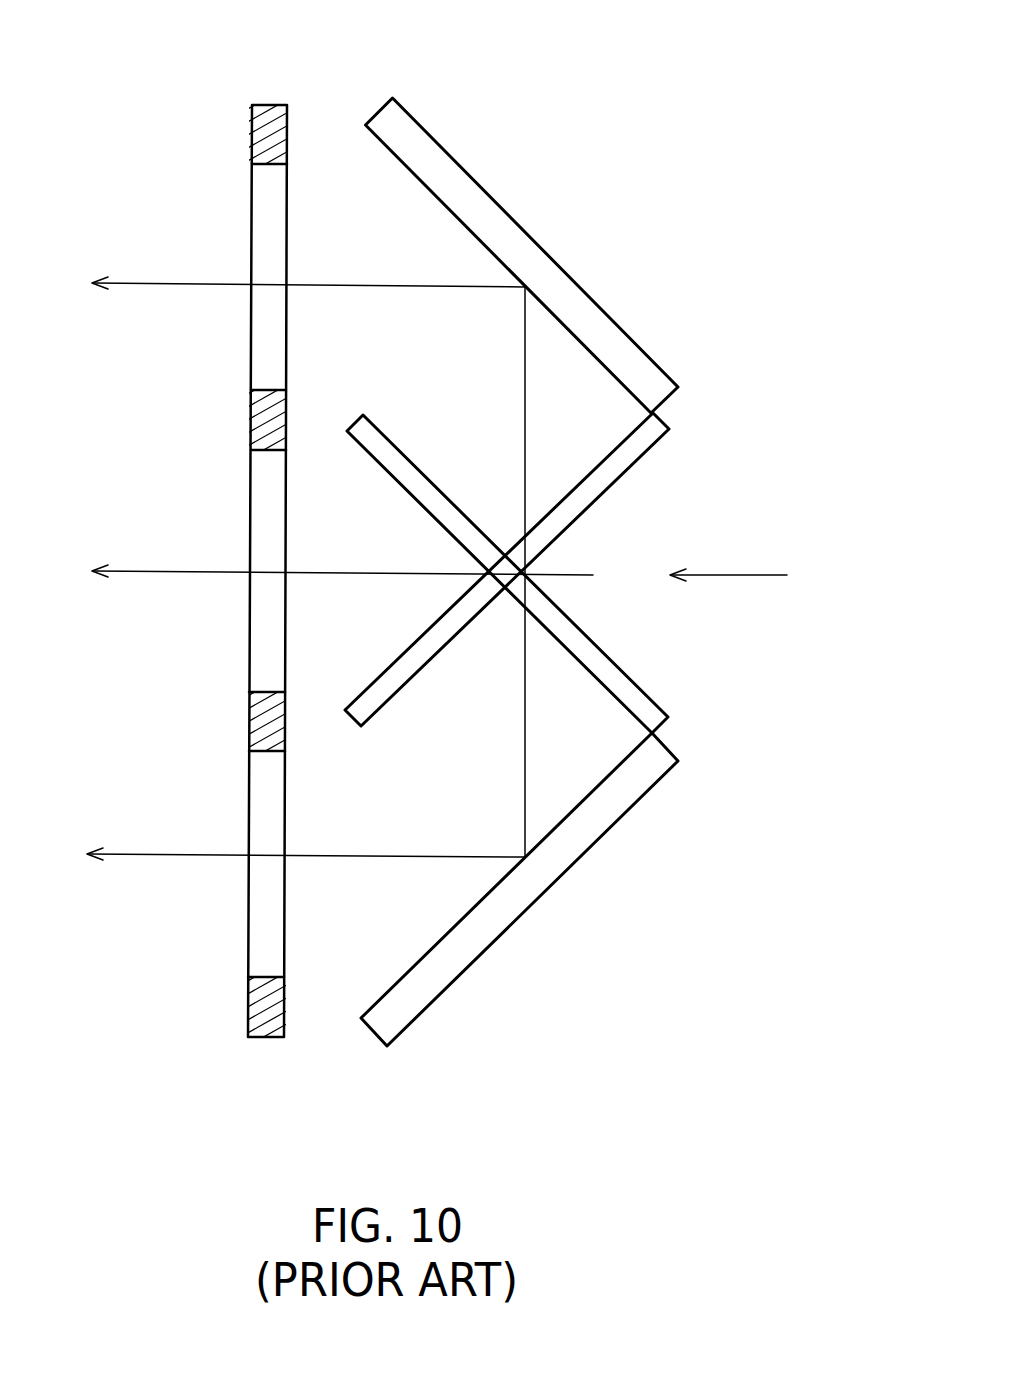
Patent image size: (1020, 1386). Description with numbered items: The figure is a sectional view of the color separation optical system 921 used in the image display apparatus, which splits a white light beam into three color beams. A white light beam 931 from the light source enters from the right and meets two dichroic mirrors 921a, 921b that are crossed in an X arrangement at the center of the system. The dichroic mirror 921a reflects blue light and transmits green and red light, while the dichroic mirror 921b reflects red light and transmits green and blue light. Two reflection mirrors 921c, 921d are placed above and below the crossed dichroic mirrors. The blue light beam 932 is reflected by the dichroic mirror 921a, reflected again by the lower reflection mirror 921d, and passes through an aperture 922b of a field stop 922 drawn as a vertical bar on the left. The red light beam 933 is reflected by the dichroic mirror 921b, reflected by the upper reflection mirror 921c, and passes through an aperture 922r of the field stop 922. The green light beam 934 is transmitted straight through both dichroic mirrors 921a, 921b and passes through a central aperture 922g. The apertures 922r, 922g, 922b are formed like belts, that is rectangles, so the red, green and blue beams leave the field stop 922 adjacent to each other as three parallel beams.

The color separation optical system 921 is at (680, 62).
The dichroic mirror 921a is at (648, 457).
The dichroic mirror 921b is at (642, 688).
The reflection mirror 921c is at (612, 315).
The reflection mirror 921d is at (605, 837).
The field stop 922 is at (247, 127).
The aperture 922r is at (273, 238).
The aperture 922g is at (273, 538).
The aperture 922b is at (270, 945).
The white light beam 931 is at (753, 577).
The blue light beam 932 is at (173, 856).
The red light beam 933 is at (173, 285).
The green light beam 934 is at (173, 573).